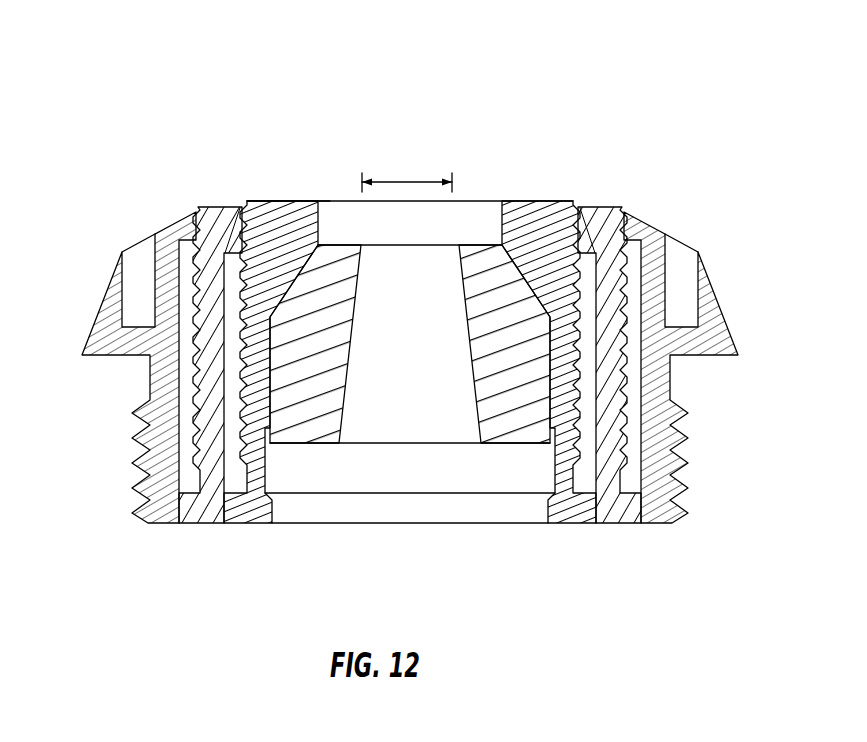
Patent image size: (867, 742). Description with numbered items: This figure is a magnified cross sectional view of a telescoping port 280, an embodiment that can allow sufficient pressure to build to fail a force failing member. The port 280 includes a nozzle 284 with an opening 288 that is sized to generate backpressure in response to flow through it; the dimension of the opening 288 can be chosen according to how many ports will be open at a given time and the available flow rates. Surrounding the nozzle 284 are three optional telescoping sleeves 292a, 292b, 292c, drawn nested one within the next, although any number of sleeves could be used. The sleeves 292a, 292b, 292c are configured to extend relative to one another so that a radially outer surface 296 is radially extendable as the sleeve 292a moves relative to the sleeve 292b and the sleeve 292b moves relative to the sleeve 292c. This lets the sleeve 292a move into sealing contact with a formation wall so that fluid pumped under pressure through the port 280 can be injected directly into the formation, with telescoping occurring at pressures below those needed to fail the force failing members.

The port 280 is at (566, 62).
The nozzle 284 is at (342, 242).
The opening 288 is at (393, 180).
The telescoping sleeve 292a is at (533, 201).
The telescoping sleeve 292b is at (604, 207).
The telescoping sleeve 292c is at (655, 224).
The radially outer surface 296 is at (270, 192).